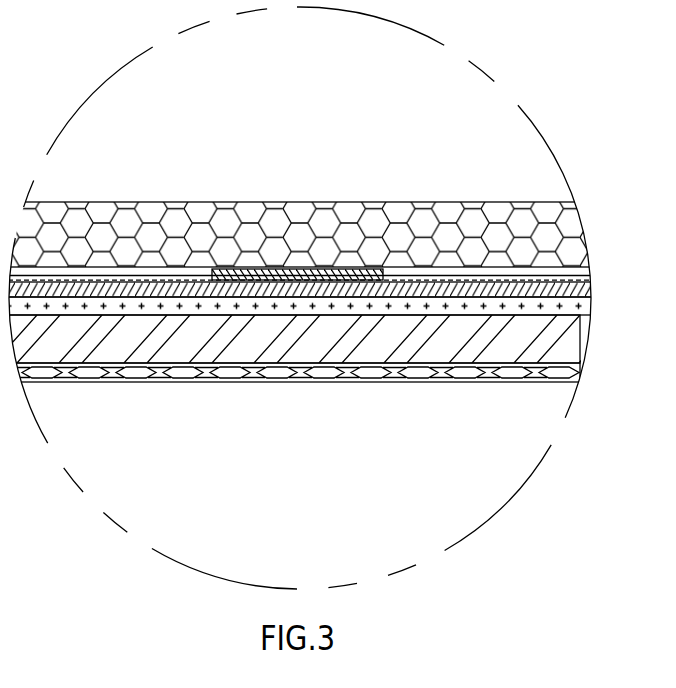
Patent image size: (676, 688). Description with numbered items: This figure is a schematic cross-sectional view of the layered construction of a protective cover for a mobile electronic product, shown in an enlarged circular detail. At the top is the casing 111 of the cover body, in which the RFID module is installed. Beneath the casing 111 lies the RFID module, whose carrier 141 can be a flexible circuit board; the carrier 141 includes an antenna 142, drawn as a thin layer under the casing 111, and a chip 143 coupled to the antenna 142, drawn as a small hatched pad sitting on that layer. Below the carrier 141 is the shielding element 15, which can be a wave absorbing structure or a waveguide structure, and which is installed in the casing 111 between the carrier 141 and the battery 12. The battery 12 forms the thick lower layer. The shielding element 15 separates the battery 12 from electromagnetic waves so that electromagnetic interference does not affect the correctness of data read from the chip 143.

The casing 111 is at (433, 220).
The antenna 142 is at (138, 277).
The chip 143 is at (290, 270).
The carrier 141 is at (587, 289).
The shielding element 15 is at (557, 307).
The battery 12 is at (310, 347).